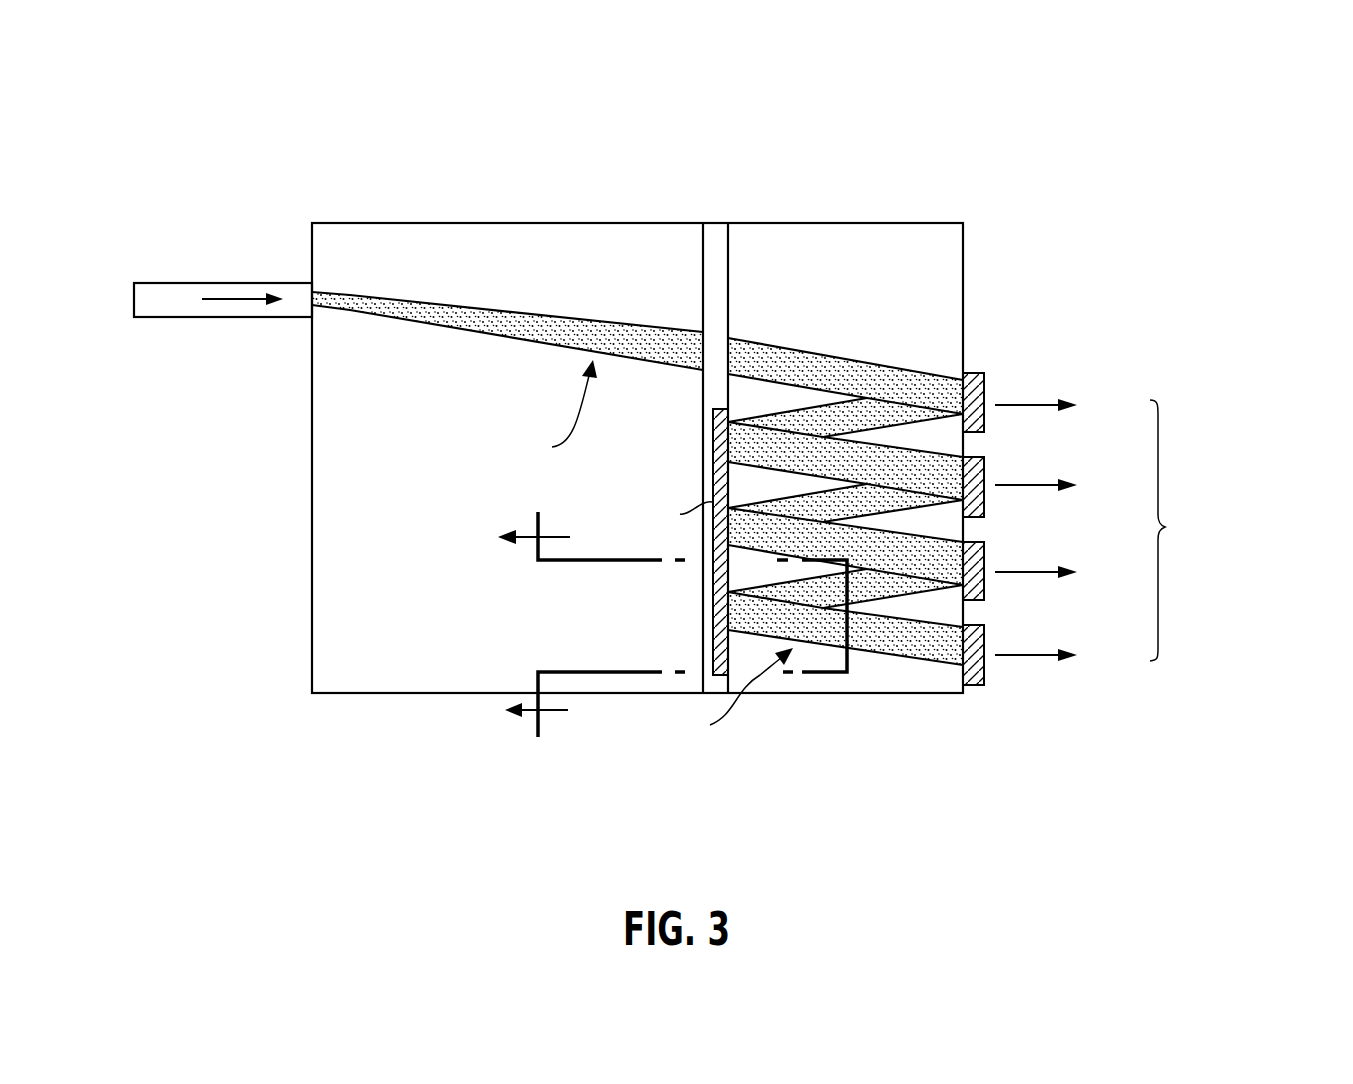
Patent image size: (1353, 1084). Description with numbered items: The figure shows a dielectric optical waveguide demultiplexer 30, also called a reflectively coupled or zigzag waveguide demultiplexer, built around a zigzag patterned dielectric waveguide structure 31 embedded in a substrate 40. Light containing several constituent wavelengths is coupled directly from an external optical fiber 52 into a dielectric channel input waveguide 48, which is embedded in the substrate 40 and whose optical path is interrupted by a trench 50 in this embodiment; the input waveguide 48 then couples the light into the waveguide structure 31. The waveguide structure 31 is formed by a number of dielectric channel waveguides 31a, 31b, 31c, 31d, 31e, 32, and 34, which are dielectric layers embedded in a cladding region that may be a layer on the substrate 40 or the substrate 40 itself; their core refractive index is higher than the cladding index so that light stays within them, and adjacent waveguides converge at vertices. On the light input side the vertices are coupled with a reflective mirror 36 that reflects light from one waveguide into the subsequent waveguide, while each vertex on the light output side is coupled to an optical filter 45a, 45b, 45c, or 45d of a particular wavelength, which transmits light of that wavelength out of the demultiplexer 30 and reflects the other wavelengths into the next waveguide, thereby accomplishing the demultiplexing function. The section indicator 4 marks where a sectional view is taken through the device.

The dielectric optical waveguide demultiplexer 30 is at (1224, 128).
The zigzag waveguide structure 31 is at (836, 506).
The dielectric channel waveguide 31a is at (885, 356).
The dielectric channel waveguide 31b is at (757, 420).
The dielectric channel waveguide 31c is at (897, 453).
The dielectric channel waveguide 31d is at (784, 496).
The dielectric channel waveguide 31e is at (900, 530).
The dielectric channel waveguide 32 is at (905, 597).
The dielectric channel waveguide 34 is at (892, 657).
The mirror 36 is at (712, 422).
The substrate 40 is at (520, 222).
The optical filter 45a is at (976, 374).
The optical filter 45b is at (978, 457).
The optical filter 45c is at (978, 542).
The optical filter 45d is at (978, 625).
The dielectric channel input waveguide 48 is at (547, 318).
The trench 50 is at (718, 222).
The external optical fiber 52 is at (160, 318).
The section line 4- 4 is at (672, 625).